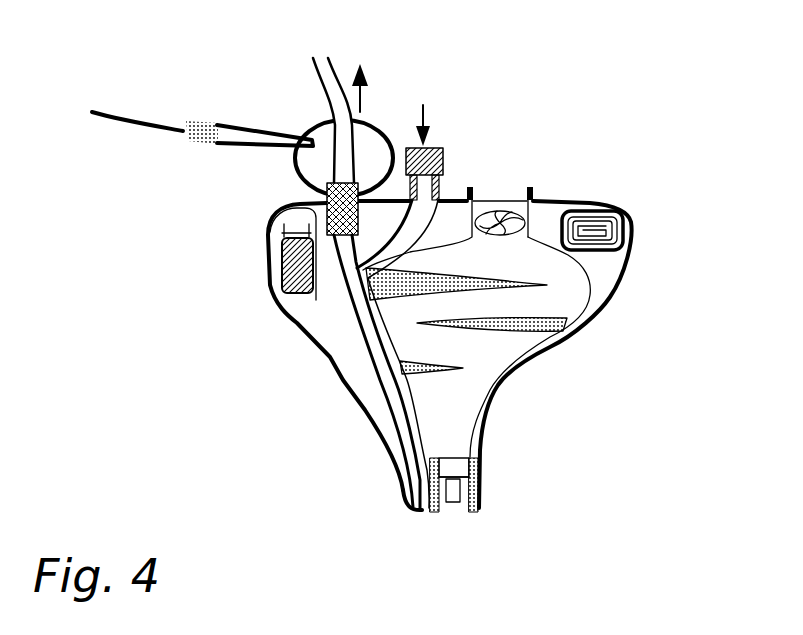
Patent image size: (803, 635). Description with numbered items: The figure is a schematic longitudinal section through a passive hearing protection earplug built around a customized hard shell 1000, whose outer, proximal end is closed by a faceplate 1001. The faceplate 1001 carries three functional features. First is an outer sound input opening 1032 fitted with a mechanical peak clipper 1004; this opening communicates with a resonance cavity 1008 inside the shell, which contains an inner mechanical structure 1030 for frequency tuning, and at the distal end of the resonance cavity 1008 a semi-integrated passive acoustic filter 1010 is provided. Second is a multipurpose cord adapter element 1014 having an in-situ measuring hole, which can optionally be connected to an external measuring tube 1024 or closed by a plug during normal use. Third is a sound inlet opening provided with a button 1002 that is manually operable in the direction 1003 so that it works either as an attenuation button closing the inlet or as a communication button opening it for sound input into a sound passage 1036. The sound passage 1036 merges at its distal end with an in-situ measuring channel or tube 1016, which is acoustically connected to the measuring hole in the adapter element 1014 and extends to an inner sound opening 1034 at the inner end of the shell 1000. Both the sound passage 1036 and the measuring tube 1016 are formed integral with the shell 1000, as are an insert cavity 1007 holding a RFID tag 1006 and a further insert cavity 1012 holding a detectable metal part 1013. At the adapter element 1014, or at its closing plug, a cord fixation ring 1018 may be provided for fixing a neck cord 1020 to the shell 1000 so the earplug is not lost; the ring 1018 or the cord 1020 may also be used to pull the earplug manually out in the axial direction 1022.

The customized hard shell 1000 is at (557, 345).
The faceplate 1001 is at (500, 190).
The button 1002 is at (450, 193).
The direction of button operation 1003 is at (433, 122).
The mechanical peak clipper 1004 is at (538, 200).
The RFID tag 1006 is at (622, 213).
The insert cavity for RFID tag 1007 is at (613, 210).
The resonance cavity 1008 is at (578, 282).
The semi-integrated passive acoustic filter 1010 is at (480, 473).
The insert cavity for detectable metal part 1012 is at (275, 272).
The detectable metal part 1013 is at (283, 257).
The multipurpose cord adapter element 1014 is at (337, 237).
The in-situ measuring channel or tube 1016 is at (395, 413).
The cord fixation ring 1018 is at (293, 173).
The neck cord 1020 is at (253, 127).
The axial direction 1022 is at (370, 85).
The external measuring tube 1024 is at (322, 87).
The inner mechanical structure 1030 is at (547, 285).
The outer sound input opening 1032 is at (497, 195).
The inner sound opening 1034 is at (403, 503).
The sound passage 1036 is at (345, 237).